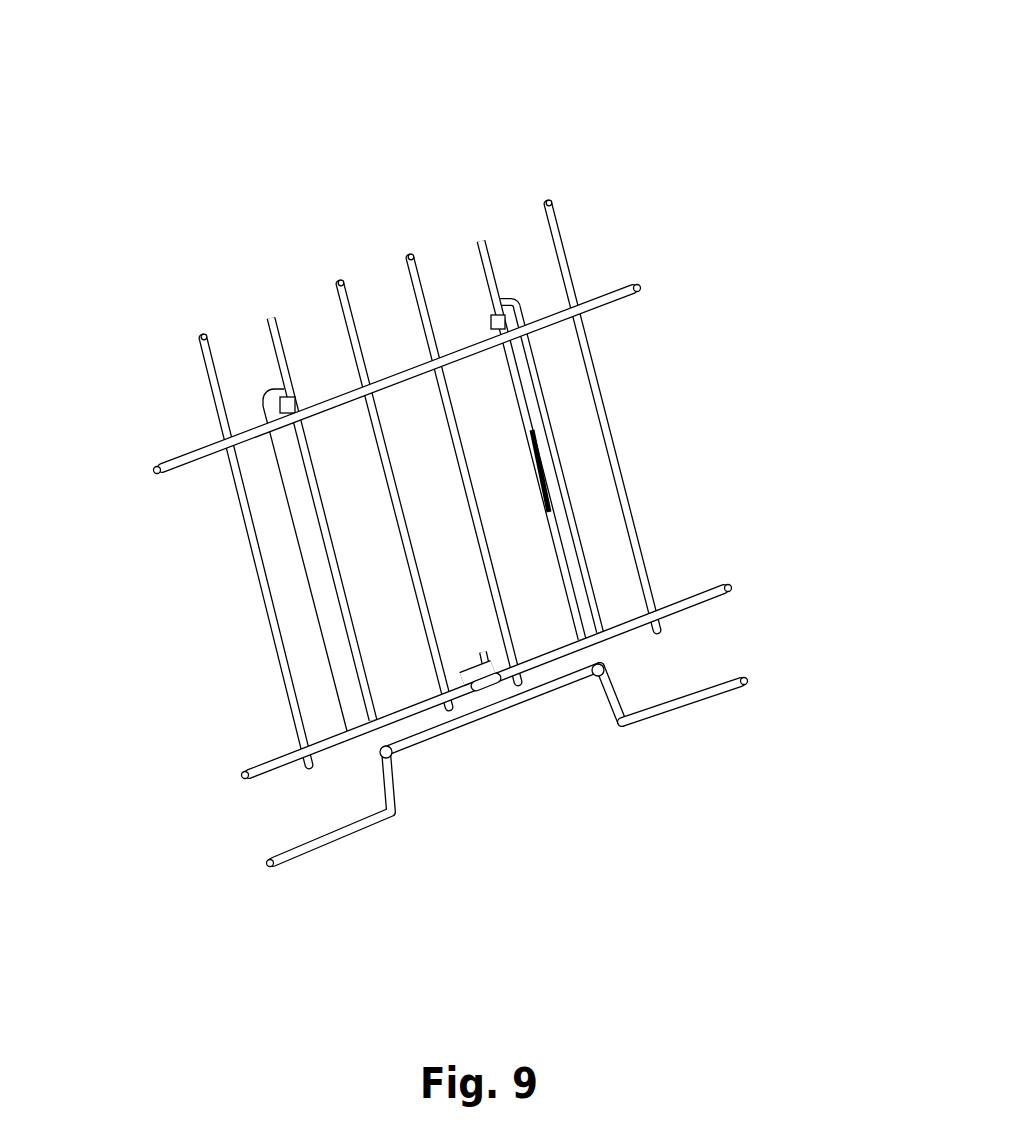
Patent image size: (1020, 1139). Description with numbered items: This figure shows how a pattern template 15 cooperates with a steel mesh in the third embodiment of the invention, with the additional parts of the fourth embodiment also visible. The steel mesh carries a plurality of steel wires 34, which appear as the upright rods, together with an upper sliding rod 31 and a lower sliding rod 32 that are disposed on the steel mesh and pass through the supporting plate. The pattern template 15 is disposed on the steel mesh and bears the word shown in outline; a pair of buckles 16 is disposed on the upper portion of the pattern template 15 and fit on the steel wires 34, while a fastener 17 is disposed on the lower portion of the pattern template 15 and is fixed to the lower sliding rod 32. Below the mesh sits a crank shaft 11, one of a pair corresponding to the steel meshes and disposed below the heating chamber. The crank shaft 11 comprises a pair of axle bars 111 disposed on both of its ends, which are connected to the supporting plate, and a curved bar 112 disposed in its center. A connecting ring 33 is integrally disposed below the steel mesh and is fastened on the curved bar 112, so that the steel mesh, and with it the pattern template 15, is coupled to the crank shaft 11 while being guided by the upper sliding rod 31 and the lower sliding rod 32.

The crank shaft 11 is at (545, 793).
The axle bar 111 is at (688, 705).
The curved bar 112 is at (538, 695).
The pattern template 15 is at (337, 632).
The buckle 16 is at (494, 328).
The fastener 17 is at (483, 677).
The upper sliding rod 31 is at (607, 290).
The lower sliding rod 32 is at (715, 585).
The connecting ring 33 is at (635, 727).
The steel wire 34 is at (484, 277).